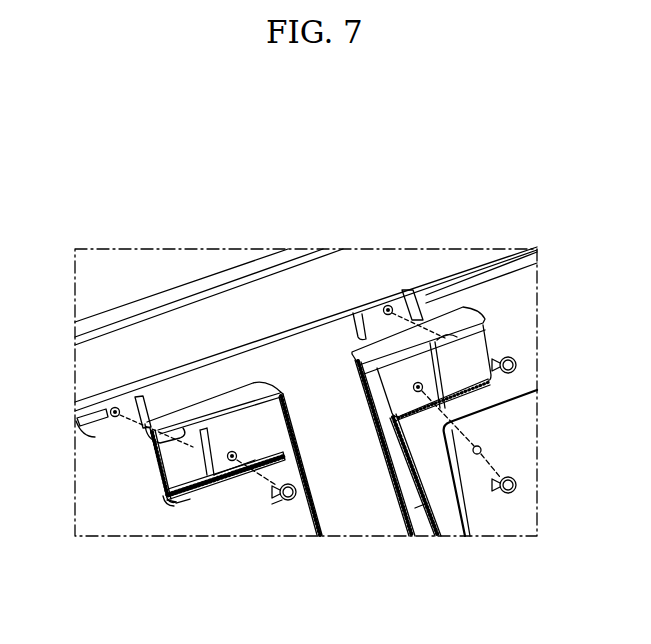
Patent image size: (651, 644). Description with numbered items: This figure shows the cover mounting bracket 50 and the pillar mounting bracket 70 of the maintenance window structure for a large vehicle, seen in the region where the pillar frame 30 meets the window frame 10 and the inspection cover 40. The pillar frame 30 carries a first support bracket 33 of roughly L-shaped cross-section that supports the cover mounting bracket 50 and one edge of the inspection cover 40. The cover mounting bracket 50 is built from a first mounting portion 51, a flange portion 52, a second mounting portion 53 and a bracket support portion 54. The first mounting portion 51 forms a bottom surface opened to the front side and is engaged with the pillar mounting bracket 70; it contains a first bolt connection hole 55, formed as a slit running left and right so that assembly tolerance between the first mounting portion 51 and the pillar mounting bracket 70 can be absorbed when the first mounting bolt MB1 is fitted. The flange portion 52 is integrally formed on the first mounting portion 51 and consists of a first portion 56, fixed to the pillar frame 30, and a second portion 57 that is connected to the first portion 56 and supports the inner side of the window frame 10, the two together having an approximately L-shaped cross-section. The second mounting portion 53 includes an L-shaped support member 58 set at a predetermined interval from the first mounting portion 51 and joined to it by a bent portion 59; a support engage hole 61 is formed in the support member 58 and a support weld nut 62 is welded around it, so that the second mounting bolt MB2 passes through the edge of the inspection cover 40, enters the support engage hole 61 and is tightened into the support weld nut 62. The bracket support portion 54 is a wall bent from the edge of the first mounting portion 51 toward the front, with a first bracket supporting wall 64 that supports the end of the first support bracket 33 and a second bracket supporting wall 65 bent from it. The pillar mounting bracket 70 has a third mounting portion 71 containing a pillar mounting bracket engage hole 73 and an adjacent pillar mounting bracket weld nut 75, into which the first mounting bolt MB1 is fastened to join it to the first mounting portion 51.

The window frame 10 is at (82, 314).
The pillar frame 30 is at (311, 368).
The first support bracket 33 is at (277, 502).
The inspection cover 40 is at (462, 507).
The cover mounting bracket 50 is at (308, 395).
The first mounting portion 51 is at (153, 443).
The flange portion 52 is at (213, 326).
The second mounting portion 53 is at (248, 492).
The bracket support portion 54 is at (136, 554).
The first bolt connection hole 55 is at (172, 442).
The first portion 56 is at (245, 405).
The second portion 57 is at (223, 410).
The support member 58 is at (275, 466).
The bent portion 59 is at (200, 500).
The support engage hole 61 is at (422, 386).
The support weld nut 62 is at (425, 391).
The first bracket supporting wall 64 is at (183, 502).
The second bracket supporting wall 65 is at (135, 516).
The pillar mounting bracket 70 is at (240, 319).
The third mounting portion 71 is at (132, 403).
The pillar mounting bracket engage hole 73 is at (112, 417).
The pillar mounting bracket weld nut 75 is at (113, 410).
The first mounting bolt MB1 is at (298, 502).
The second mounting bolt MB2 is at (517, 486).